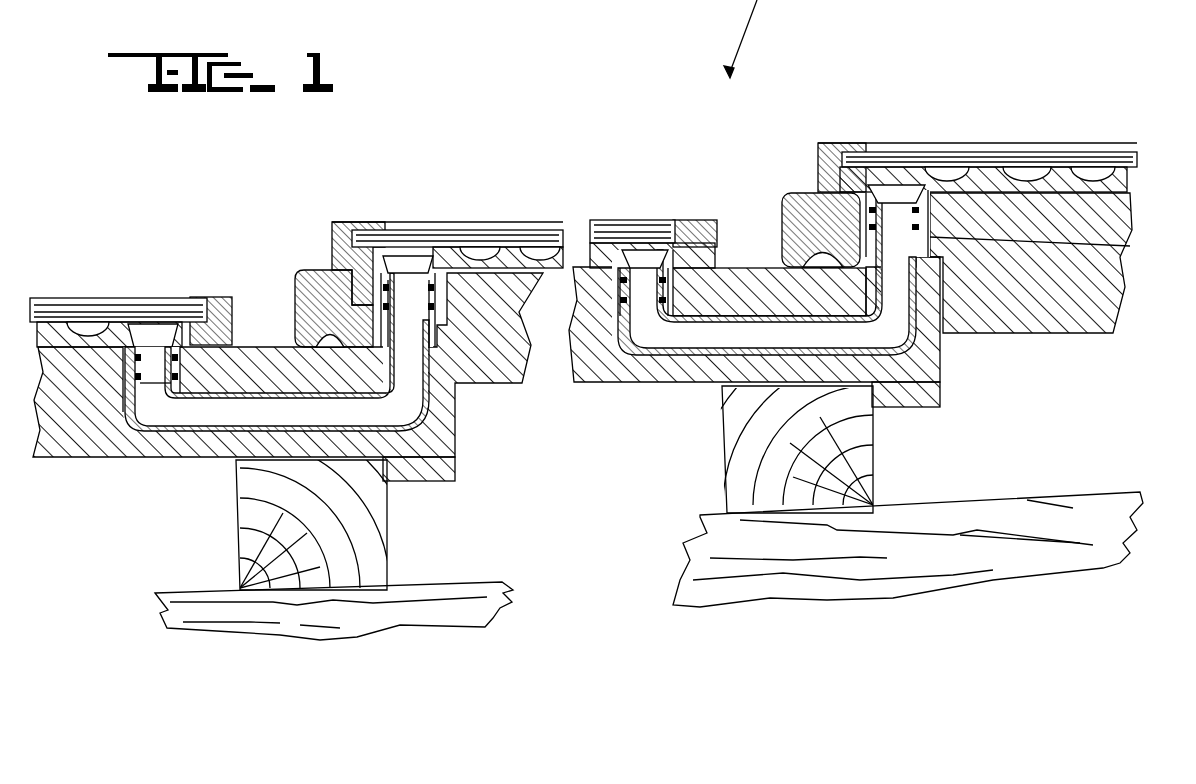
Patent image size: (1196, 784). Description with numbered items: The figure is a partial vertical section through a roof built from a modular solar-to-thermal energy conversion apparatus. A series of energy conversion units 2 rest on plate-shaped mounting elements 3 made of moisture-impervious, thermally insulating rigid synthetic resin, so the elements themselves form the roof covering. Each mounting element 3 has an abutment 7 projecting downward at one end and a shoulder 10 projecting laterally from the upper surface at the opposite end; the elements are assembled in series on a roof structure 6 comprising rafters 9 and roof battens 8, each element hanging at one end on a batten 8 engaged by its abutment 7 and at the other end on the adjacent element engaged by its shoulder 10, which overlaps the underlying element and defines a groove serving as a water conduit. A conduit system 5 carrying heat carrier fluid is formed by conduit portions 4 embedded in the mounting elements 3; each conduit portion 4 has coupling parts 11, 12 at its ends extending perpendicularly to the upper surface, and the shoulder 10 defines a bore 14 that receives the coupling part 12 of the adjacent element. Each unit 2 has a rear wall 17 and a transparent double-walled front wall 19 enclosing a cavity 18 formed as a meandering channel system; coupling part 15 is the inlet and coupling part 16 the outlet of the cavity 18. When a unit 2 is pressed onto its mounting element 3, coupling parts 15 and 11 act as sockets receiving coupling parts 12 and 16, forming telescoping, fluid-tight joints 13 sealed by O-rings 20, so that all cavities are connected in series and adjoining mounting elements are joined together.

The energy conversion unit 2 is at (224, 300).
The mounting element 3 is at (97, 440).
The conduit portion 4 is at (246, 392).
The conduit system 5 is at (452, 474).
The roof structure 6 is at (760, 611).
The abutment 7 is at (398, 455).
The roof batten 8 is at (358, 526).
The rafter 9 is at (463, 590).
The shoulder 10 is at (318, 300).
The coupling part 11 is at (570, 380).
The coupling part 12 is at (1131, 246).
The fluid-tight joint 13 is at (846, 192).
The bore 14 is at (353, 298).
The coupling part 15 is at (440, 290).
The coupling part 16 is at (640, 262).
The rear wall 17 is at (483, 250).
The cavity 18 is at (88, 329).
The transparent front wall 19 is at (396, 255).
The O-ring 20 is at (871, 200).